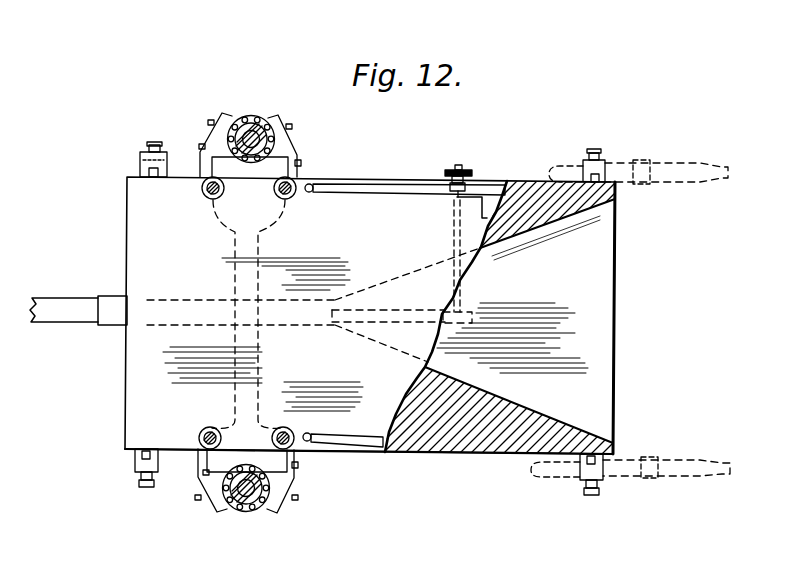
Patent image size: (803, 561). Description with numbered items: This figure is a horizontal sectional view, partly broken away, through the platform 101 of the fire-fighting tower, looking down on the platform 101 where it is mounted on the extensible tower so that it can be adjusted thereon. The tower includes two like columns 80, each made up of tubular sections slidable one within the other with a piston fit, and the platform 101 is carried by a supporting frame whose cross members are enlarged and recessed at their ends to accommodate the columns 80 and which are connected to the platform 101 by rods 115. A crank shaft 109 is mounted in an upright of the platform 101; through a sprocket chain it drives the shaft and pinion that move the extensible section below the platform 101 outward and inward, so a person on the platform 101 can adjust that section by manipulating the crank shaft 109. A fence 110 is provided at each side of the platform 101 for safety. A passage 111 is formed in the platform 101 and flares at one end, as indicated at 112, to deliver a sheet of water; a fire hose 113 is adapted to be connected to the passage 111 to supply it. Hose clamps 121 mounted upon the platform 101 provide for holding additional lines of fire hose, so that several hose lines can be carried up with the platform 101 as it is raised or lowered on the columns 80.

The column 80 is at (253, 121).
The platform 101 is at (140, 388).
The crank shaft 109 is at (456, 196).
The fence 110 is at (384, 184).
The passage 111 is at (184, 300).
The flared end of passage 112 is at (603, 342).
The fire hose 113 is at (52, 308).
The rod 115 is at (288, 200).
The hose clamp 121 is at (146, 161).